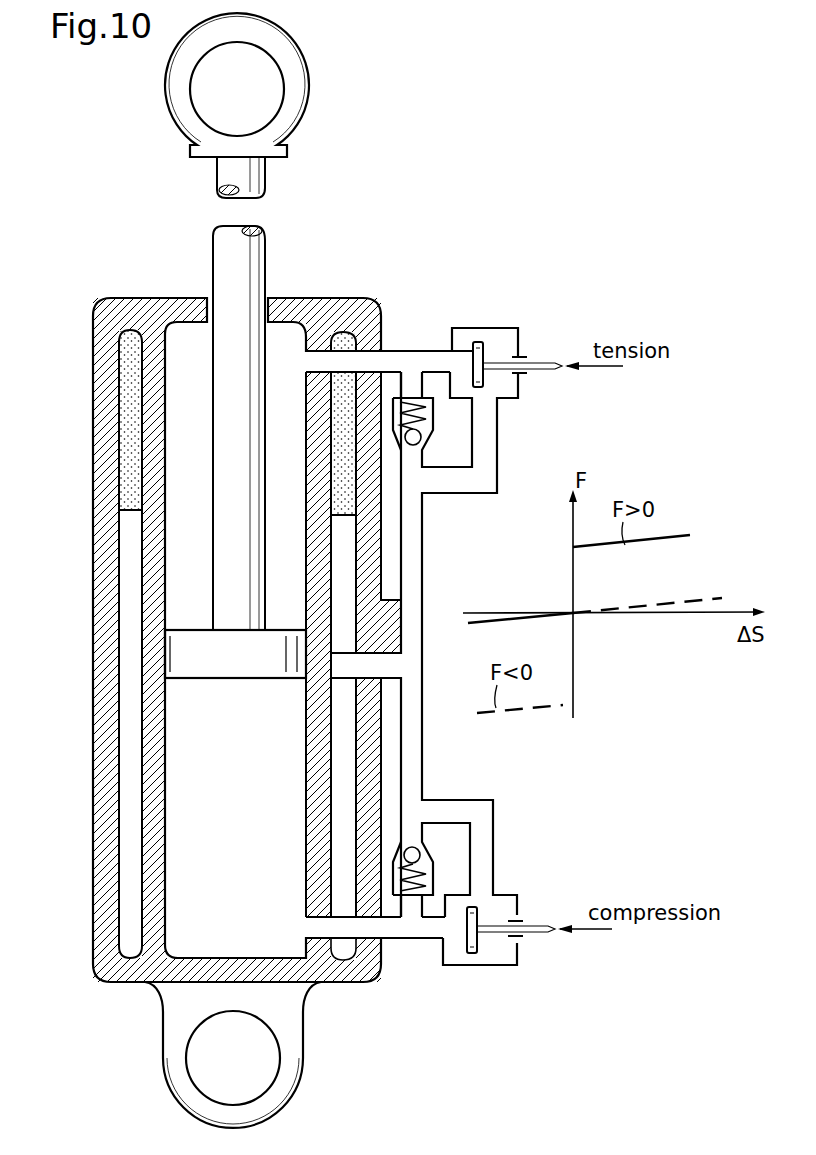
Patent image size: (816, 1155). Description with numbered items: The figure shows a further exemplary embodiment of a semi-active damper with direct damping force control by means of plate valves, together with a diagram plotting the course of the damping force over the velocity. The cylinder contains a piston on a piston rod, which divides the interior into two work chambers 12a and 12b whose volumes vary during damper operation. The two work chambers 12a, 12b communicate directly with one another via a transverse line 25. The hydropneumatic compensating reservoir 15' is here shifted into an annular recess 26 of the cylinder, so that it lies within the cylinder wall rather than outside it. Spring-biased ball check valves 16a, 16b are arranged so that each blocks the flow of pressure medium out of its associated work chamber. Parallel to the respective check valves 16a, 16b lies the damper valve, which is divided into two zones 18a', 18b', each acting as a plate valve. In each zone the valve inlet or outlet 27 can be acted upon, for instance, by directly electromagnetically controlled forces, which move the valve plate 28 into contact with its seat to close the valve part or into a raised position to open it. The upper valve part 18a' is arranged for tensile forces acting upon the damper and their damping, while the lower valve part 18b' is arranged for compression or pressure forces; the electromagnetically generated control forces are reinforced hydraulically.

The work chamber 12a is at (186, 350).
The work chamber 12b is at (185, 805).
The compensating reservoir 15' is at (203, 423).
The annular recess 26 is at (125, 556).
The transverse line 25 is at (374, 668).
The valve inlet or outlet 27 is at (462, 364).
The valve plate 28 is at (478, 338).
The upper valve part 18a' is at (507, 315).
The lower valve part 18b' is at (516, 977).
The check valve 16a is at (427, 445).
The check valve 16b is at (425, 860).